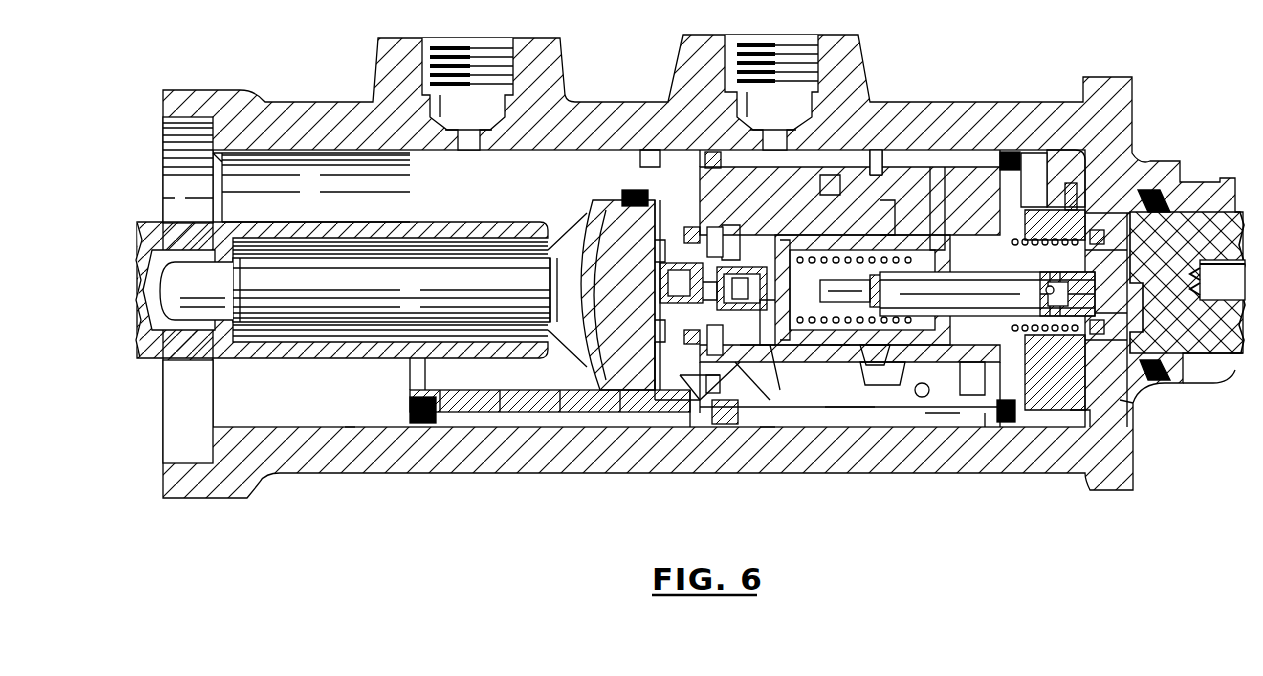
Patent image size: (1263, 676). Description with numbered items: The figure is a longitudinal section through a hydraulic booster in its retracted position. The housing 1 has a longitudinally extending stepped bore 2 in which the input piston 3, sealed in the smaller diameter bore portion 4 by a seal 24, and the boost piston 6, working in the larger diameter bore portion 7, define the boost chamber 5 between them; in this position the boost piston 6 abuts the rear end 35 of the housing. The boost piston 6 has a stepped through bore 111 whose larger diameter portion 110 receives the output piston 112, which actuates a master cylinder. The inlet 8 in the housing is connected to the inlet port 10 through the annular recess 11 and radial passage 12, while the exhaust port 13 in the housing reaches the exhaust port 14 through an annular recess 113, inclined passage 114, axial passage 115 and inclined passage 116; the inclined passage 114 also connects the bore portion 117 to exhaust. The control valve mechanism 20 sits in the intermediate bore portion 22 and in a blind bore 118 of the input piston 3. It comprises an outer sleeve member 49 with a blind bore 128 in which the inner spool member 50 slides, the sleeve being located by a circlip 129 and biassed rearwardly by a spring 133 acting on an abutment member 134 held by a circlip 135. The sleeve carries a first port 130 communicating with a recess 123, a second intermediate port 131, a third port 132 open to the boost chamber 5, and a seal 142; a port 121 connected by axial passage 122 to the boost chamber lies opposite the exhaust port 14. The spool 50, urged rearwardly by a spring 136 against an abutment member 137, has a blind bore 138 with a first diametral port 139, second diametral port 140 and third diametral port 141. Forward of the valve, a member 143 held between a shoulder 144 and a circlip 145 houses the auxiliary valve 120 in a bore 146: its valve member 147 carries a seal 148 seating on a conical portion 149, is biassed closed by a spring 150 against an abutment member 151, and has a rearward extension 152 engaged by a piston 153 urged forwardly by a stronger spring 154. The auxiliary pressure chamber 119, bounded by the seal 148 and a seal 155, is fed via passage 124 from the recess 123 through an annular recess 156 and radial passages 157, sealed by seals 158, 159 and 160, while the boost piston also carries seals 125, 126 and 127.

The housing 1 is at (1110, 68).
The stepped bore 2 is at (287, 432).
The input piston 3 is at (1240, 358).
The bore portion of smaller diameter 4 is at (1200, 383).
The boost chamber 5 is at (1085, 160).
The boost piston 6 is at (470, 405).
The bore portion of larger diameter 7 is at (345, 430).
The inlet 8 is at (795, 72).
The inlet port 10 is at (945, 200).
The annular recess 11 is at (875, 160).
The radial passage 12 is at (935, 175).
The exhaust port 13 is at (487, 70).
The exhaust port 14 is at (1005, 422).
The control valve mechanism 20 is at (880, 345).
The bore portion of intermediate diameter 22 is at (830, 368).
The seal 24 is at (1160, 380).
The rear end of the housing 35 is at (1080, 420).
The outer sleeve member 49 is at (1108, 275).
The inner spool member 50 is at (835, 280).
The larger diameter portion of bore 110 is at (497, 408).
The stepped through bore 111 is at (533, 412).
The output piston 112 is at (338, 307).
The annular recess 113 is at (690, 440).
The inclined passage 114 is at (768, 445).
The axial passage 115 is at (835, 398).
The inclined passage 116 is at (935, 430).
The bore portion 117 is at (835, 318).
The blind bore 118 is at (1120, 400).
The auxiliary pressure chamber 119 is at (655, 215).
The auxiliary valve 120 is at (564, 288).
The port 121 is at (1013, 210).
The axial passage 122 is at (1030, 220).
The recess 123 is at (880, 245).
The passage 124 is at (835, 240).
The seal 125 is at (420, 428).
The seal 126 is at (730, 430).
The seal 127 is at (985, 440).
The blind bore 128 is at (922, 397).
The circlip 129 is at (1130, 247).
The first port 130 is at (875, 290).
The second intermediate port 131 is at (970, 398).
The third port 132 is at (1060, 450).
The spring 133 is at (1085, 225).
The abutment member 134 is at (1140, 195).
The circlip 135 is at (1093, 332).
The spring 136 is at (800, 258).
The abutment member 137 is at (780, 240).
The blind bore 138 is at (940, 290).
The first diametral port 139 is at (870, 312).
The second diametral port 140 is at (1010, 400).
The third diametral port 141 is at (1050, 280).
The seal 142 is at (862, 395).
The member 143 is at (692, 227).
The shoulder 144 is at (700, 250).
The circlip 145 is at (652, 150).
The bore 146 is at (660, 345).
The valve member 147 is at (662, 312).
The seal 148 is at (660, 405).
The conical portion 149 is at (718, 412).
The spring 150 is at (690, 275).
The abutment member 151 is at (660, 290).
The rearward extension 152 is at (770, 338).
The piston 153 is at (760, 312).
The spring 154 is at (752, 265).
The seal 155 is at (628, 190).
The annular recess 156 is at (712, 152).
The radial passages 157 is at (650, 255).
The seal 158 is at (700, 402).
The seal 159 is at (745, 388).
The seal 160 is at (728, 225).